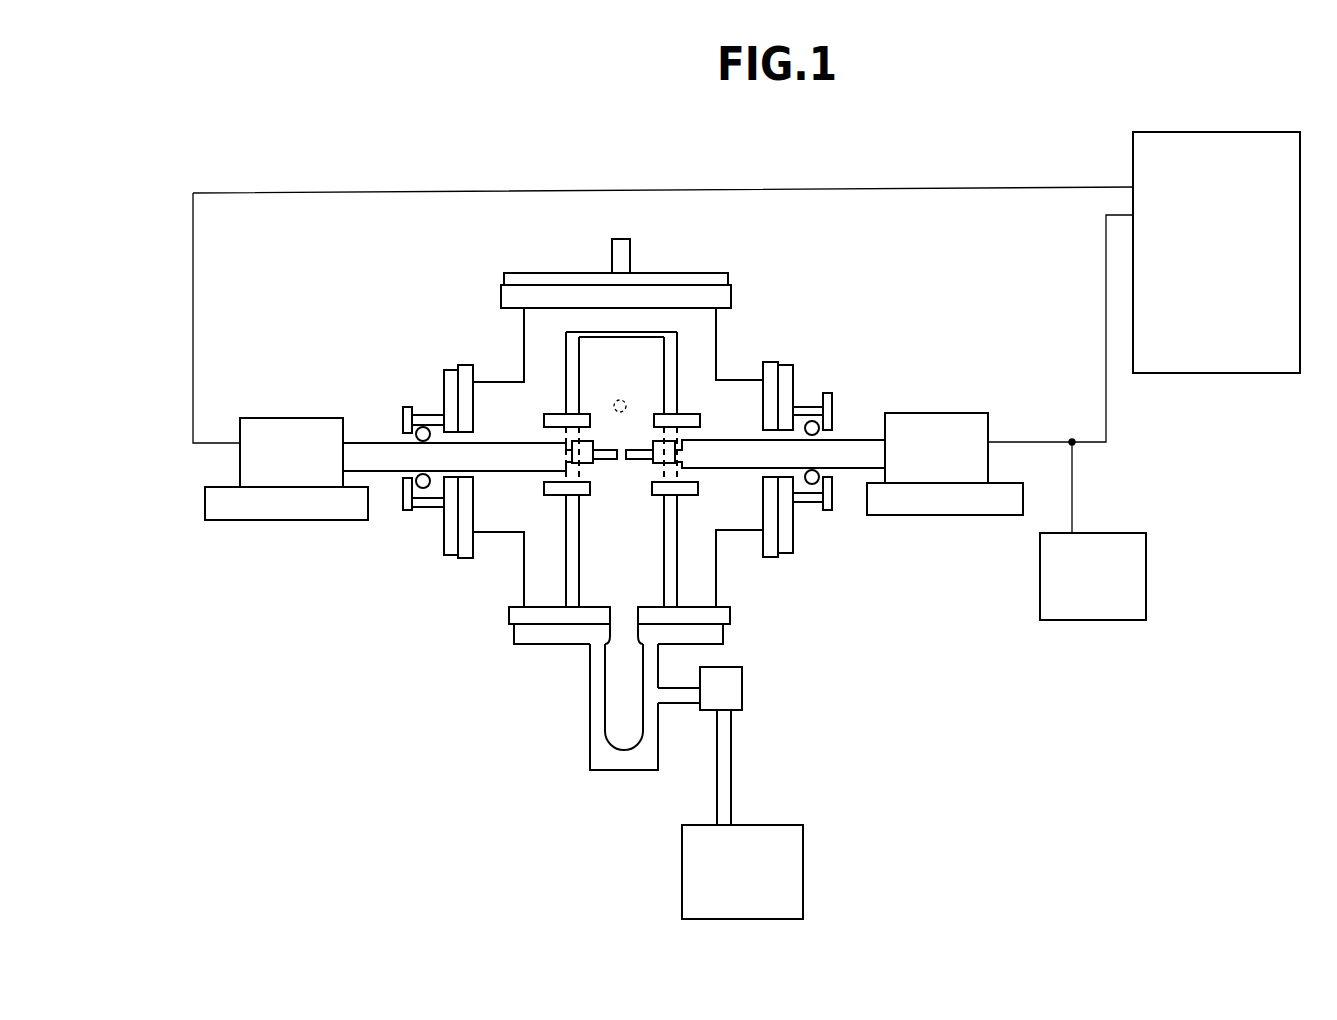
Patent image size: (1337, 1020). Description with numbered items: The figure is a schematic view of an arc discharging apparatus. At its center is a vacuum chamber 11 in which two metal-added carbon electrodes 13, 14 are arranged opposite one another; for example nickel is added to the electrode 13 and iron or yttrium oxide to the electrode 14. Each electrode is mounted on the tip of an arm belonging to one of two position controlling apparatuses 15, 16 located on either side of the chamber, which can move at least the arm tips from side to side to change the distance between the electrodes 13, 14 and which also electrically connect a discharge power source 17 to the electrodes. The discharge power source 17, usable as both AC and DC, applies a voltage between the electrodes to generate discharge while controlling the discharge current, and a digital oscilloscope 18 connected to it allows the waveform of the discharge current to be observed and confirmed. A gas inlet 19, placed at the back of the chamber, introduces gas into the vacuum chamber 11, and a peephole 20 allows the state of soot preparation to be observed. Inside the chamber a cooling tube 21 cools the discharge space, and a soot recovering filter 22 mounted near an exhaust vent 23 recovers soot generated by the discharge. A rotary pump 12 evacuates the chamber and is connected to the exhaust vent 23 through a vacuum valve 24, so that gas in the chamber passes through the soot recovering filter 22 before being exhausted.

The vacuum chamber 11 is at (523, 340).
The rotary pump 12 is at (803, 845).
The metal-added carbon electrode 13 is at (610, 465).
The metal-added carbon electrode 14 is at (642, 465).
The position controlling apparatus 15 is at (297, 435).
The position controlling apparatus 16 is at (945, 413).
The discharge power source 17 is at (1204, 375).
The digital oscilloscope 18 is at (1136, 563).
The gas inlet 19 is at (626, 402).
The peephole 20 is at (632, 257).
The cooling tube 21 is at (677, 360).
The soot recovering filter 22 is at (605, 682).
The exhaust vent 23 is at (682, 703).
The vacuum valve 24 is at (742, 682).